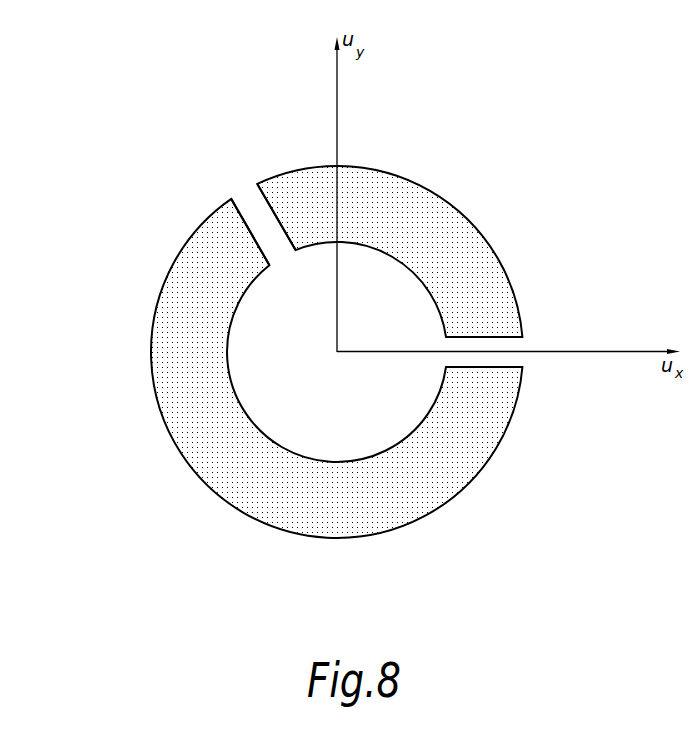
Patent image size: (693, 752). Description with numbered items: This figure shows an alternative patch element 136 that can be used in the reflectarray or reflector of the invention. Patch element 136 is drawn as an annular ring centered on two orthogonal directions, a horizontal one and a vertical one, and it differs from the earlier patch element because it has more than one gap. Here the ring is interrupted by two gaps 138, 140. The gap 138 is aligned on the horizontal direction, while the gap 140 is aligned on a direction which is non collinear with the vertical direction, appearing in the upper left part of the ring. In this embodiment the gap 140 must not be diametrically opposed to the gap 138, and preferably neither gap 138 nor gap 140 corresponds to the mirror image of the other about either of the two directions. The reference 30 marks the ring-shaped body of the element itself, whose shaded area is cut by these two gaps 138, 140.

The annular ring / transducer element 30 is at (339, 314).
The patch element 136 is at (448, 182).
The gap 138 is at (517, 342).
The gap 140 is at (248, 203).